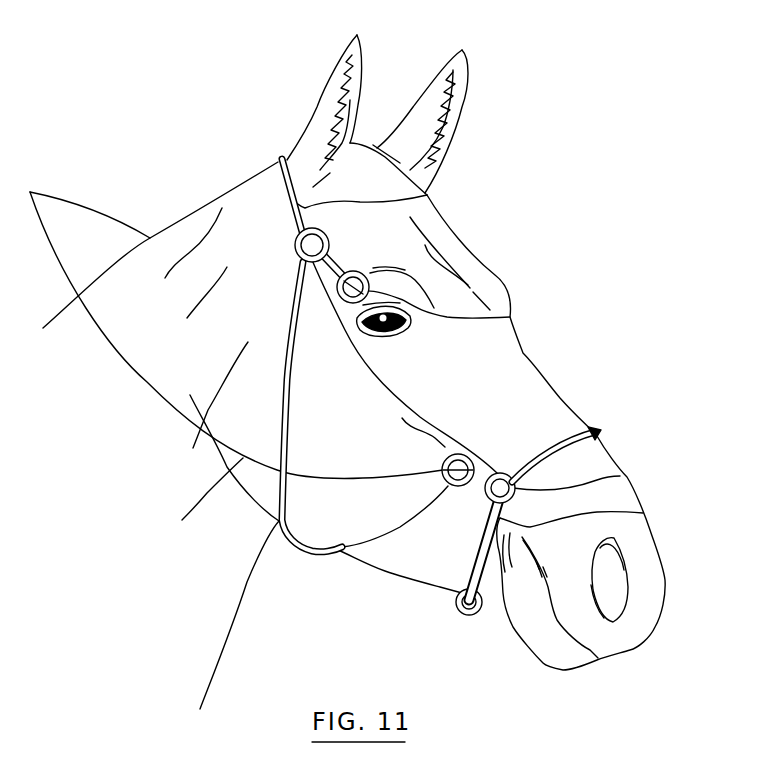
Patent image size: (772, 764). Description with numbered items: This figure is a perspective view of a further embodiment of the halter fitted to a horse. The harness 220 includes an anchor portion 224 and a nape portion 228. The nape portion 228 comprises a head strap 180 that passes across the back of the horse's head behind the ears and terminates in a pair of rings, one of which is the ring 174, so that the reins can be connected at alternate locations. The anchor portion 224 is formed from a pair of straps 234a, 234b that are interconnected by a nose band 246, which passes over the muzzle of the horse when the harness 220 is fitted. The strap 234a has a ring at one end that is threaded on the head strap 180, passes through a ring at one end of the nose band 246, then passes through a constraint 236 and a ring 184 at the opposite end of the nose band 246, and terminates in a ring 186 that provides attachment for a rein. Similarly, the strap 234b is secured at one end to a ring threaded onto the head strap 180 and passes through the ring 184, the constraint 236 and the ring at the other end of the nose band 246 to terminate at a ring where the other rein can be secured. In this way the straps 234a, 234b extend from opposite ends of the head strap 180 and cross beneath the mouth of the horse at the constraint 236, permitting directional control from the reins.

The ring 174 is at (512, 317).
The head strap 180 is at (427, 195).
The ring 184 is at (620, 476).
The ring 186 is at (355, 560).
The harness 220 is at (252, 217).
The anchor portion 224 is at (475, 398).
The nape portion 228 is at (250, 136).
The strap 234a is at (477, 545).
The strap 234b is at (643, 513).
The constraint 236 is at (468, 615).
The nose band 246 is at (601, 432).